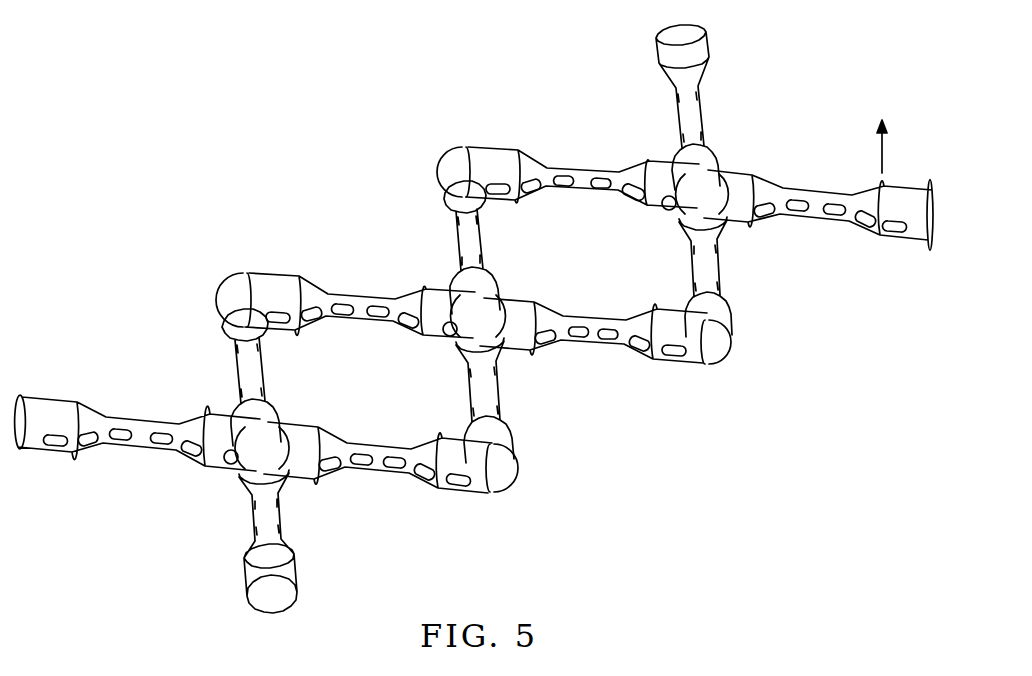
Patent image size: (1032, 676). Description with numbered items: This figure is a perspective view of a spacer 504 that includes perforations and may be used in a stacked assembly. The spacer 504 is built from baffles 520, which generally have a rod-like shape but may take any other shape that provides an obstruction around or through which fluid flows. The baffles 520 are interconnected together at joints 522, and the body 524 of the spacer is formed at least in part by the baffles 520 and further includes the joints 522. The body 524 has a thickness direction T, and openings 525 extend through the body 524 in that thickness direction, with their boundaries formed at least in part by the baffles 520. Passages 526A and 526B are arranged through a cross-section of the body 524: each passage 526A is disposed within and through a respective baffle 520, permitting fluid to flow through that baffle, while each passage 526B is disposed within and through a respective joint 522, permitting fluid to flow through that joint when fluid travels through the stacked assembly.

The spacer 504 is at (827, 70).
The baffles 520 is at (585, 165).
The joints 522 is at (457, 273).
The body 524 is at (185, 503).
The openings 525 is at (577, 298).
The passages 526A is at (343, 316).
The passages 526B is at (666, 211).